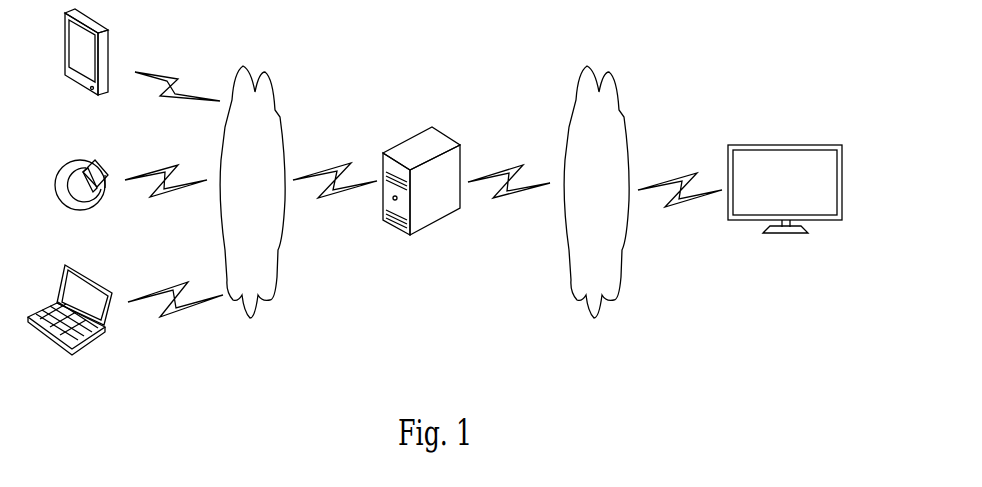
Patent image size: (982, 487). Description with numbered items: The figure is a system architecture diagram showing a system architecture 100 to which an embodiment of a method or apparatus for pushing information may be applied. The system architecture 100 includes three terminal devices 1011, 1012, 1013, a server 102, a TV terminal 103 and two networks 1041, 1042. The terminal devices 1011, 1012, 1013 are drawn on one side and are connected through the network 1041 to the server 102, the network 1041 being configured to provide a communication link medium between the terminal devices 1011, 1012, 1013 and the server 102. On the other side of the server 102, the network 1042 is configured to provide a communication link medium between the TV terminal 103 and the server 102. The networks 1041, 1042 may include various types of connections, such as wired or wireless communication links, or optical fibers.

The system architecture 100 is at (776, 48).
The terminal device 1011 is at (85, 68).
The terminal device 1012 is at (81, 203).
The terminal device 1013 is at (70, 323).
The network 1041 is at (251, 192).
The server 102 is at (421, 197).
The network 1042 is at (595, 192).
The TV terminal 103 is at (785, 203).